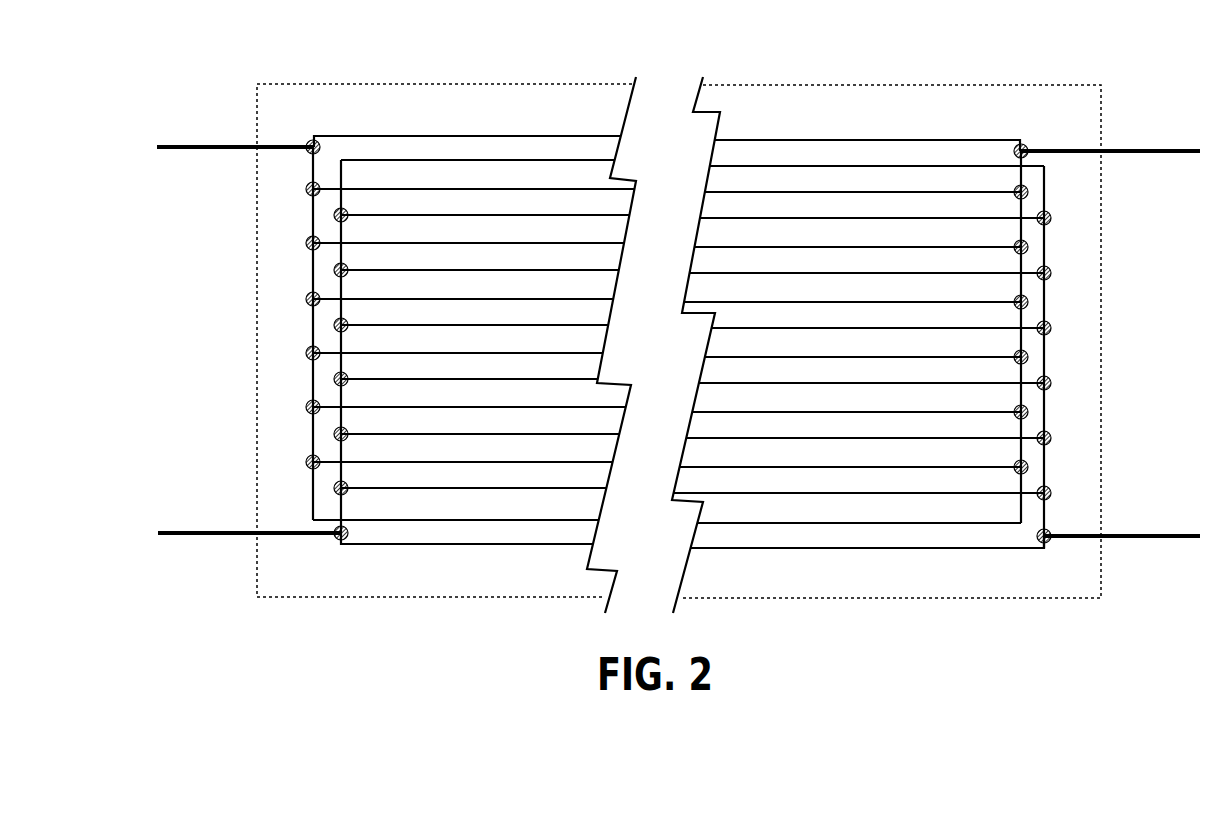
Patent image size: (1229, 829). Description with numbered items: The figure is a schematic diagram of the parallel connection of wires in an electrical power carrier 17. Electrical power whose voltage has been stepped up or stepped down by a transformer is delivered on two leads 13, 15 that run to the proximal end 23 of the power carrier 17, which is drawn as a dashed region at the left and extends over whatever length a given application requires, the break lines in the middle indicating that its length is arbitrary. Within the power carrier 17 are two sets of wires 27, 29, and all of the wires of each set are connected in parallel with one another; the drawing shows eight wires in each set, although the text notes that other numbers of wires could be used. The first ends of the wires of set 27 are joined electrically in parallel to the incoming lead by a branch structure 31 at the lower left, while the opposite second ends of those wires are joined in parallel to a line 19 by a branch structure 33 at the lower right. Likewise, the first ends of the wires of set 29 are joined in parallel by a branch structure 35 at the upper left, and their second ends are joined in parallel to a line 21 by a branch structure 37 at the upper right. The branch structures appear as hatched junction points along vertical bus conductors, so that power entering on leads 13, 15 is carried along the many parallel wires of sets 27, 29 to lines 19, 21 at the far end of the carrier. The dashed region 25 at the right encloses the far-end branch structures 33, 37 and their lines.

The lead 13 is at (205, 529).
The lead 15 is at (207, 150).
The power carrier 17 is at (797, 598).
The line 19 is at (1140, 533).
The line 21 is at (1167, 154).
The proximal end 23 is at (318, 83).
The second winding section 25 is at (932, 84).
The set of wires 27 is at (469, 546).
The set of wires 29 is at (461, 135).
The branch structure 31 is at (352, 550).
The branch structure 33 is at (1030, 552).
The branch structure 35 is at (307, 133).
The branch structure 37 is at (1003, 133).